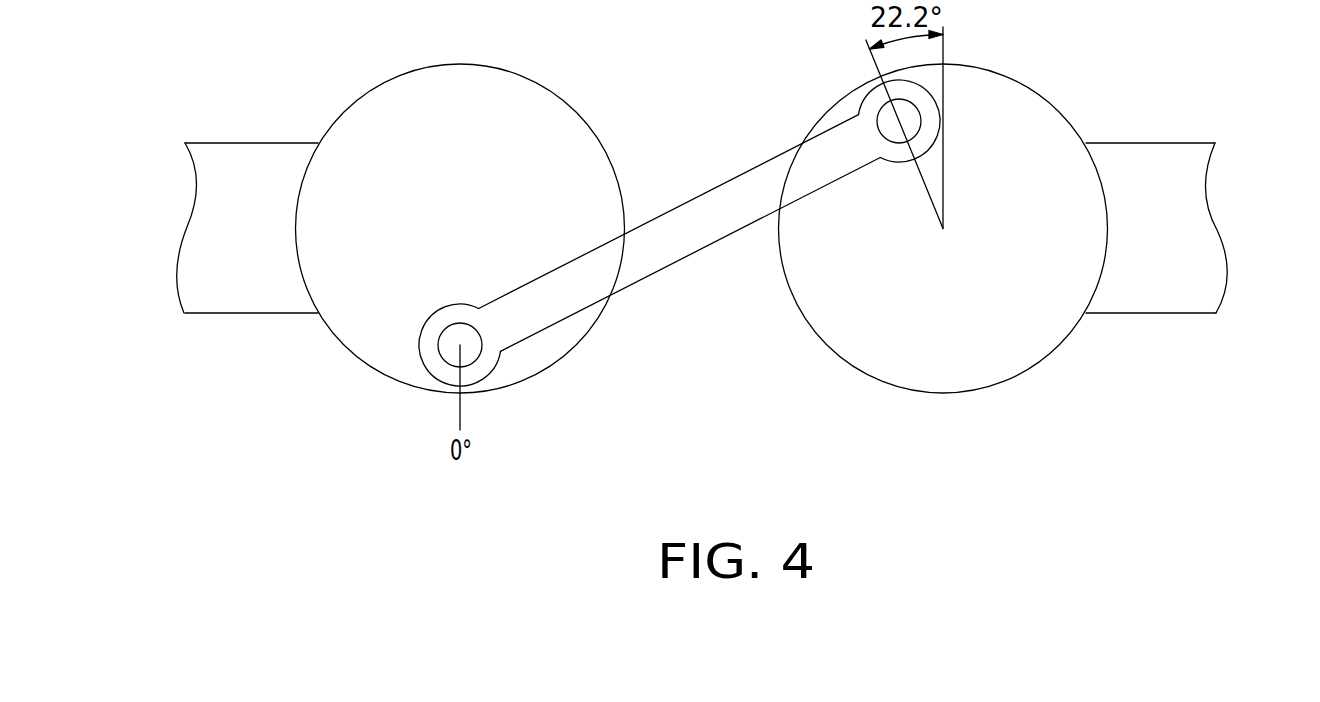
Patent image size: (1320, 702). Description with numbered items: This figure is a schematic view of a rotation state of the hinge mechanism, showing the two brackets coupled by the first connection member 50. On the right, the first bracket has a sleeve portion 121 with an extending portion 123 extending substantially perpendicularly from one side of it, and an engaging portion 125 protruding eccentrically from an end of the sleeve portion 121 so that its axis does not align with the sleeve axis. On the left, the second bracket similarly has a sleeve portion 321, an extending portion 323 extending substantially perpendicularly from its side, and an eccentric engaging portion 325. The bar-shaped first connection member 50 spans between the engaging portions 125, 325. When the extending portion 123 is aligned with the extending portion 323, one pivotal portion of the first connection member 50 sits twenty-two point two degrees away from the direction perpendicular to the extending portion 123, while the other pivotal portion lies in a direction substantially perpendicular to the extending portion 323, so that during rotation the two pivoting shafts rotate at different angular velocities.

The first connection member 50 is at (706, 120).
The sleeve portion 121 is at (1036, 126).
The extending portion 123 is at (1177, 222).
The engaging portion 125 is at (877, 121).
The sleeve portion 321 is at (370, 313).
The extending portion 323 is at (218, 270).
The engaging portion 325 is at (470, 342).